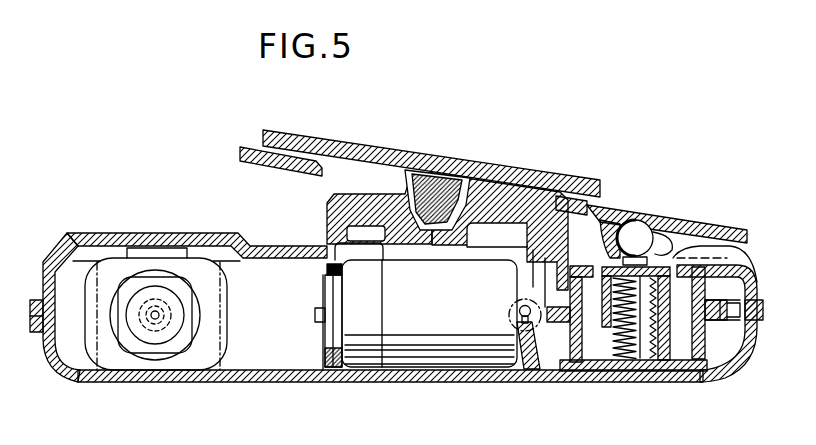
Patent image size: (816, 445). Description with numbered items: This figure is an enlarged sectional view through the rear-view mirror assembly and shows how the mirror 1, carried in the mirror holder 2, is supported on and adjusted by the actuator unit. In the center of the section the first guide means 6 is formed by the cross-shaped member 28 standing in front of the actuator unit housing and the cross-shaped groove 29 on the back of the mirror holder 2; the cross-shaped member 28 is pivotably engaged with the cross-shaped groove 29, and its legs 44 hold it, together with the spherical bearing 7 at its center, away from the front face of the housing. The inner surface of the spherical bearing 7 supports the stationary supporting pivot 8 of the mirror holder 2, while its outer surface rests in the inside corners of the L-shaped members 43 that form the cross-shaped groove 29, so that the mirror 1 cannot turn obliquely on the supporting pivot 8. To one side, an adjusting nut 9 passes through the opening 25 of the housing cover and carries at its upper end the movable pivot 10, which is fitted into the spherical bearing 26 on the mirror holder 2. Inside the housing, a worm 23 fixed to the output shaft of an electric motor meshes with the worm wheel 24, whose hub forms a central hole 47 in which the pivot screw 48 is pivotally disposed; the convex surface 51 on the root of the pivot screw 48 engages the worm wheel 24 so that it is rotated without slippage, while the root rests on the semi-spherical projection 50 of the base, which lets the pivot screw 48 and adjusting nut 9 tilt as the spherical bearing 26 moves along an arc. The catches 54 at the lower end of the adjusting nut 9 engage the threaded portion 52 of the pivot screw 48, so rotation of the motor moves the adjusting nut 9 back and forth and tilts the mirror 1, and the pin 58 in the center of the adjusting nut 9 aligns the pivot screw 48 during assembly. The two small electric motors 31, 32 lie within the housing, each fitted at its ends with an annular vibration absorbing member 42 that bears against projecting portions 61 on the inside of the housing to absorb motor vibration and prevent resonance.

The mirror 1 is at (340, 142).
The mirror holder 2 is at (264, 164).
The first guide means 6 is at (318, 197).
The spherical bearing 7 is at (443, 250).
The stationary supporting pivot 8 is at (456, 178).
The adjusting nut 9 is at (612, 265).
The movable pivot 10 is at (641, 236).
The worm 23 is at (158, 330).
The worm wheel 24 is at (733, 307).
The opening 25 is at (676, 241).
The spherical bearing 26 is at (592, 200).
The cross-shaped member 28 is at (350, 205).
The cross-shaped groove 29 is at (413, 172).
The electric motor 31 is at (428, 345).
The electric motor 32 is at (114, 268).
The vibration absorbing member 42 is at (338, 273).
The L-shaped member 43 is at (477, 250).
The leg 44 is at (335, 236).
The central hole 47 is at (604, 348).
The pivot screw 48 is at (671, 293).
The semi-spherical projection 50 is at (629, 362).
The convex surface 51 is at (695, 370).
The threaded portion 52 is at (609, 368).
The catches 54 is at (690, 364).
The pin 58 is at (653, 364).
The projecting portions 61 is at (324, 267).